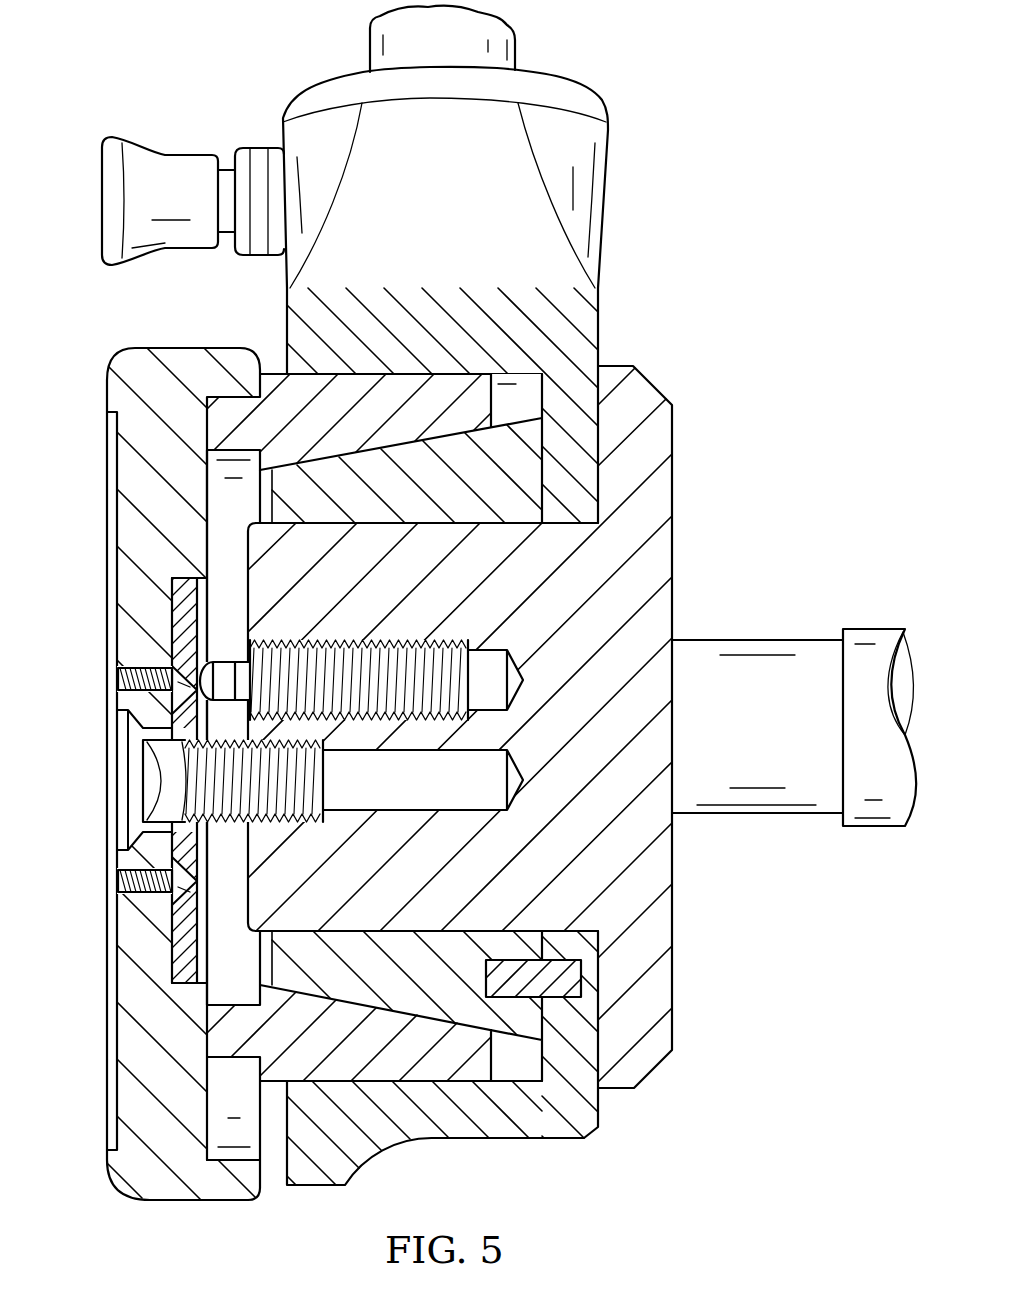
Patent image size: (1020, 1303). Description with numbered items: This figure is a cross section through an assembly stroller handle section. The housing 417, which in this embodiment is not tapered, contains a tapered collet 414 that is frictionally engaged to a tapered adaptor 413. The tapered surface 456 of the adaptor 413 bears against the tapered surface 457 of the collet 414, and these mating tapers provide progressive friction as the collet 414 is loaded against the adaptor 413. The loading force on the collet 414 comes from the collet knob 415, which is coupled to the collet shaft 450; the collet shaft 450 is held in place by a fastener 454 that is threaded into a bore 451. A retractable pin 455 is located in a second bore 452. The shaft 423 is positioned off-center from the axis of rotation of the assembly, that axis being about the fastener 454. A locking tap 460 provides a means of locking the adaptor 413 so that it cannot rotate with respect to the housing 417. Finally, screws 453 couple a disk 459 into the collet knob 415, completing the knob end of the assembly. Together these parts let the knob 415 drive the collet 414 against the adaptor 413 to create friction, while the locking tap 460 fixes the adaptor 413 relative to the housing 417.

The tapered adaptor 413 is at (527, 1020).
The tapered collet 414 is at (437, 1067).
The collet knob 415 is at (175, 1192).
The housing 417 is at (317, 1173).
The shaft 423 is at (775, 640).
The collet shaft 450 is at (663, 987).
The bore 451 is at (457, 802).
The bore 452 is at (495, 662).
The screws 453 is at (117, 680).
The fastener 454 is at (140, 778).
The retractable pin 455 is at (383, 638).
The tapered surface 456 is at (522, 412).
The tapered surface 457 is at (335, 78).
The disk 459 is at (180, 967).
The locking tap 460 is at (553, 985).